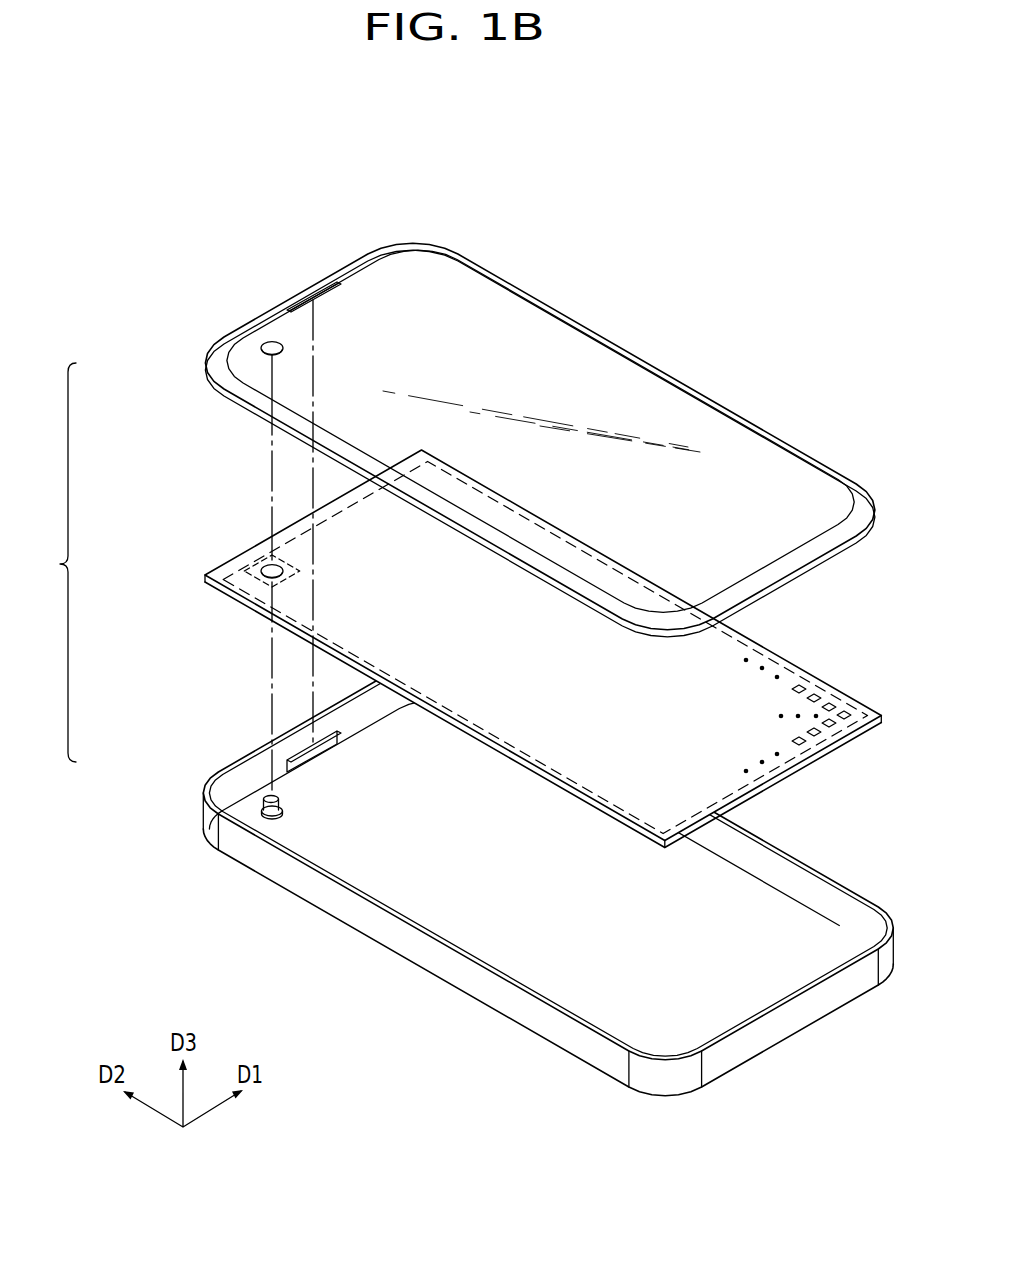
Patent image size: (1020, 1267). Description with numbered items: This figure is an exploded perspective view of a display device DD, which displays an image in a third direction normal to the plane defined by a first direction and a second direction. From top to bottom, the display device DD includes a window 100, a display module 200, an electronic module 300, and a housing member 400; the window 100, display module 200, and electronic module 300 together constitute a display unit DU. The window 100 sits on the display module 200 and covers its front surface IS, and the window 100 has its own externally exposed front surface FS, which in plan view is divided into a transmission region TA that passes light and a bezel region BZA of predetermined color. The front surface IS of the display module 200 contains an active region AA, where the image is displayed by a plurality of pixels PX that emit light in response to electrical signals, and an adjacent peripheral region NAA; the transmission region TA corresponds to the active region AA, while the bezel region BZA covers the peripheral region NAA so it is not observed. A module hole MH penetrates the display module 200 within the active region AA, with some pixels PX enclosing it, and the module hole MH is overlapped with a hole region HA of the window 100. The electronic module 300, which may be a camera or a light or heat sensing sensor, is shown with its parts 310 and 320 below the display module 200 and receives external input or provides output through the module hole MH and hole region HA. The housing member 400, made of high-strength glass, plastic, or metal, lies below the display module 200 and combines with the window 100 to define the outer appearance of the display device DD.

The display device DD is at (719, 221).
The display unit DU is at (52, 562).
The window 100 is at (197, 366).
The front surface FS is at (383, 158).
The transmission region TA is at (371, 288).
The bezel region BZA is at (390, 248).
The hole region HA is at (268, 344).
The display module 200 is at (203, 577).
The front surface IS is at (805, 585).
The active region AA is at (820, 712).
The peripheral region NAA is at (787, 666).
The pixels PX is at (808, 742).
The module hole MH is at (273, 560).
The electronic module 300 is at (132, 712).
The camera module 310 is at (268, 797).
The sensor module 320 is at (292, 752).
The housing member 400 is at (204, 822).